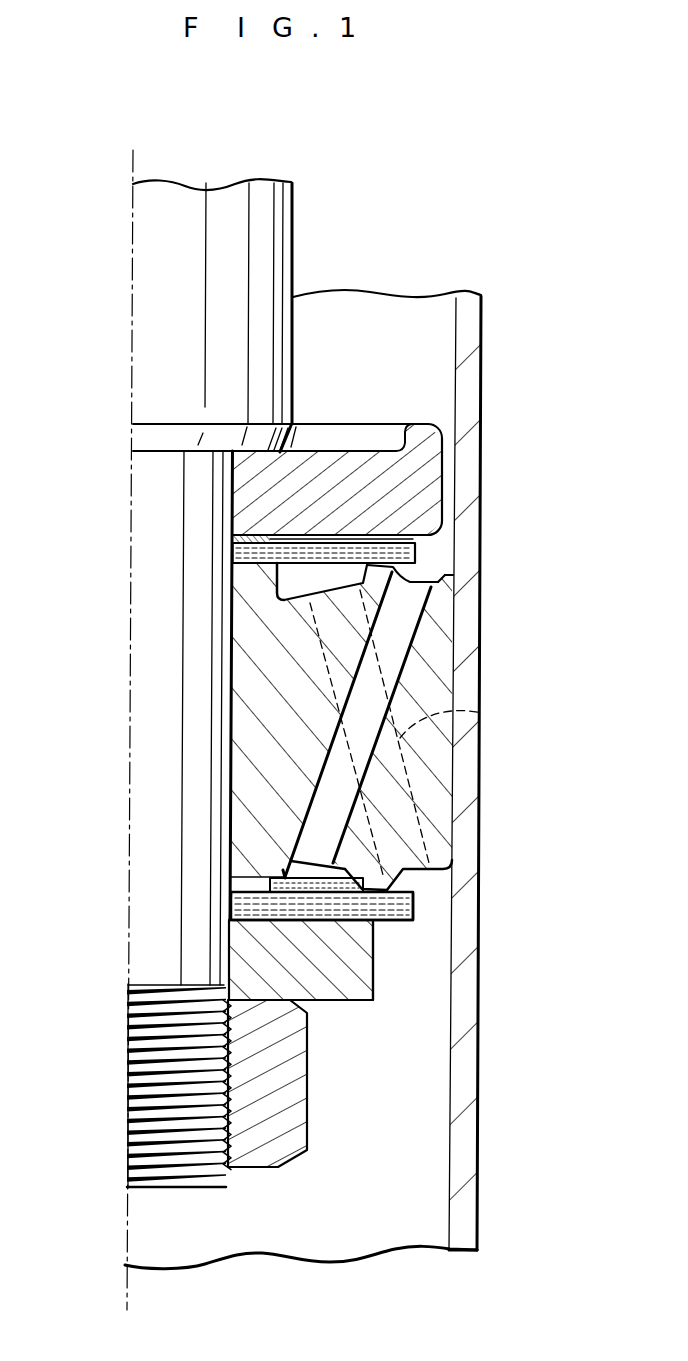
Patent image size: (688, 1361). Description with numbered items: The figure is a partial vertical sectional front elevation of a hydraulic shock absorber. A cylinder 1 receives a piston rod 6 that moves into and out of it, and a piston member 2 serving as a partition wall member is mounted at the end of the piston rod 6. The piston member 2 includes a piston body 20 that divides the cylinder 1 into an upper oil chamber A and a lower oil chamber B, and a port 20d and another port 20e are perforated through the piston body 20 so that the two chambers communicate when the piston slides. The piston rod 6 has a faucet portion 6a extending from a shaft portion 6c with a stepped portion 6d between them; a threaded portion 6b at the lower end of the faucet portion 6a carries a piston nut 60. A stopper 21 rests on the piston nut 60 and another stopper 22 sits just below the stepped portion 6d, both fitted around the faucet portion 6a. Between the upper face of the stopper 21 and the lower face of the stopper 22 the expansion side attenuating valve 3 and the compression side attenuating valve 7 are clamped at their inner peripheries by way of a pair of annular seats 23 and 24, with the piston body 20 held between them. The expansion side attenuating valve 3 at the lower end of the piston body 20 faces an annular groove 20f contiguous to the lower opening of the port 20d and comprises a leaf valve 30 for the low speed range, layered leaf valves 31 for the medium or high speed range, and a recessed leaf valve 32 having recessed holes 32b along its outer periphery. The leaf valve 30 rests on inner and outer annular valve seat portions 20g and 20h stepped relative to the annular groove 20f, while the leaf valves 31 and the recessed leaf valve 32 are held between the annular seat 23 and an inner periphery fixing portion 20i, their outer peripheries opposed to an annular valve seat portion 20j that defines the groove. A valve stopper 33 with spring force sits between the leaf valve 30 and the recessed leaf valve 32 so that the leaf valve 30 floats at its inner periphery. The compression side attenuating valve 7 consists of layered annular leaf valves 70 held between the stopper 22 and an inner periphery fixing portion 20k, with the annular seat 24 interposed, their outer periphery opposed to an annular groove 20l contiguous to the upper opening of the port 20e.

The cylinder 1 is at (466, 1155).
The piston member 2 is at (452, 579).
The expansion side attenuating valve 3 is at (422, 902).
The piston rod 6 is at (262, 252).
The faucet portion 6a is at (142, 676).
The threaded portion 6b is at (228, 1128).
The shaft portion 6c is at (165, 307).
The stepped portion 6d is at (295, 421).
The compression side attenuating valve 7 is at (426, 543).
The piston body 20 is at (308, 685).
The port 20d is at (402, 620).
The port 20e is at (481, 713).
The annular groove 20f is at (312, 872).
The inner annular valve seat portion 20g is at (285, 875).
The outer annular valve seat portion 20h is at (357, 888).
The inner periphery fixing portion 20i is at (270, 887).
The annular valve seat portion 20j is at (375, 890).
The inner periphery fixing portion 20k is at (250, 566).
The annular groove 20l is at (276, 600).
The stopper 21 is at (345, 988).
The stopper 22 is at (415, 467).
The annular seat 23 is at (232, 922).
The annular seat 24 is at (240, 536).
The leaf valve 30 is at (373, 934).
The leaf valves 31 is at (232, 908).
The recessed leaf valve 32 is at (240, 896).
The recessed holes 32b is at (428, 913).
The valve stopper 33 is at (278, 880).
The piston nut 60 is at (282, 1148).
The annular leaf valves 70 is at (232, 561).
The upper oil chamber A is at (415, 313).
The lower oil chamber B is at (398, 1203).